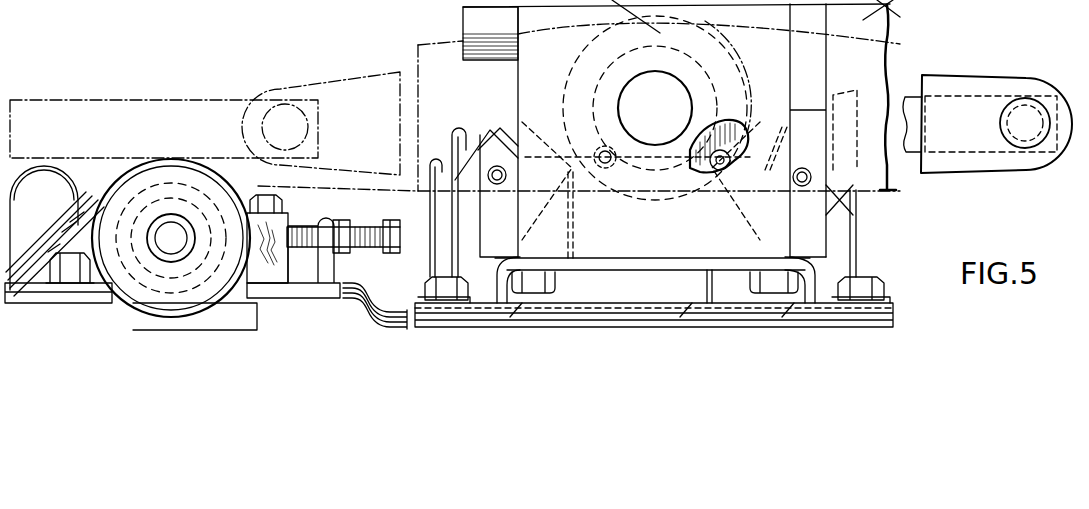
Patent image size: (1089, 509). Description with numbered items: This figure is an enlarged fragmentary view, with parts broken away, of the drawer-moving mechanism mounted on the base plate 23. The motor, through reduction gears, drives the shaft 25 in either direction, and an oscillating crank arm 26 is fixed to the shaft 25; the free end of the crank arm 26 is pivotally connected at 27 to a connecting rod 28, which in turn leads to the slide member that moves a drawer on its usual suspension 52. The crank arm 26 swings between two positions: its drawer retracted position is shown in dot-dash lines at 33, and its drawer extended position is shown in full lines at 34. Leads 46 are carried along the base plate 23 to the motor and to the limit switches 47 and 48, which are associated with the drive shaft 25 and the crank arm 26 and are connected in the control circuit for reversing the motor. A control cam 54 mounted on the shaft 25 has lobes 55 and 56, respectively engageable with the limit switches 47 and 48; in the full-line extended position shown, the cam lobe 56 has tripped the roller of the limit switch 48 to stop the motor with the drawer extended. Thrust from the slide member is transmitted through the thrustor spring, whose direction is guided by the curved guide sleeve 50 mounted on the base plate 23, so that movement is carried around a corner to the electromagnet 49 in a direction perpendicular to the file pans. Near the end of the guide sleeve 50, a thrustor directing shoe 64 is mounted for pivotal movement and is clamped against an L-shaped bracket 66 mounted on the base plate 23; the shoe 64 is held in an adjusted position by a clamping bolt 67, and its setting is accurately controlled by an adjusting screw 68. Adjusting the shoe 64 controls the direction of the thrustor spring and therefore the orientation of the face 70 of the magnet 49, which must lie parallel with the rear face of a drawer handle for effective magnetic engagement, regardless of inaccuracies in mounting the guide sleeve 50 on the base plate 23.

The base plate 23 is at (897, 317).
The shaft 25 is at (640, 88).
The oscillating crank arm 26 is at (306, 85).
The pivotal connection 27 is at (262, 112).
The connecting rod 28 is at (113, 100).
The retracted position of crank arm 33 is at (357, 77).
The extended position of crank arm 34 is at (1003, 78).
The leads 46 is at (613, 318).
The limit switch 47 is at (497, 152).
The limit switch 48 is at (818, 190).
The electromagnet 49 is at (176, 193).
The curved guide sleeve 50 is at (65, 210).
The suspension 52 is at (164, 79).
The control cam 54 is at (735, 102).
The cam lobe 55 is at (720, 62).
The cam lobe 56 is at (702, 167).
The thrustor directing shoe 64 is at (267, 267).
The L-shaped bracket 66 is at (307, 283).
The clamping bolt 67 is at (263, 205).
The adjusting screw 68 is at (372, 228).
The magnet face 70 is at (155, 275).